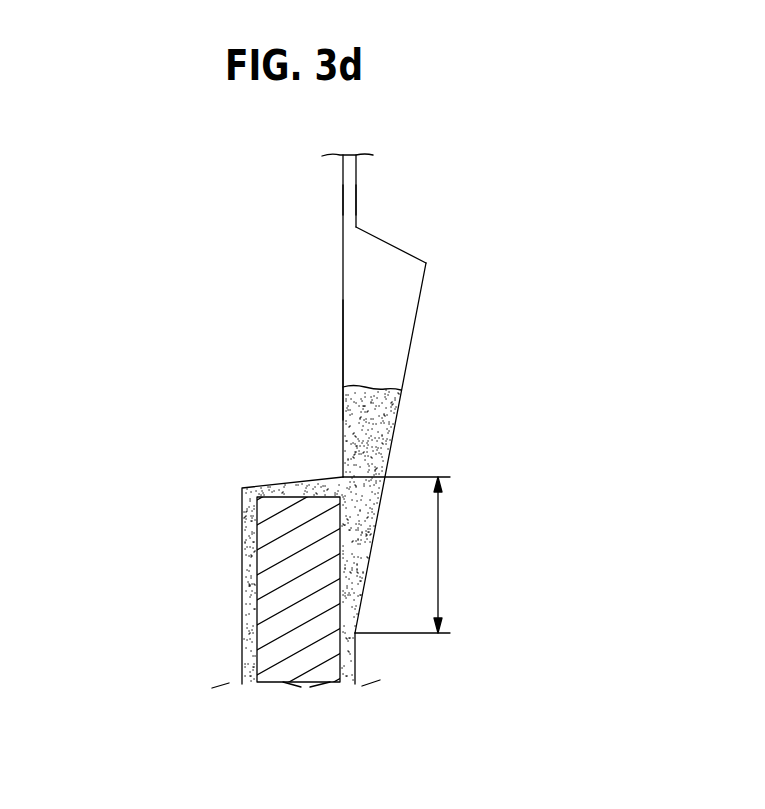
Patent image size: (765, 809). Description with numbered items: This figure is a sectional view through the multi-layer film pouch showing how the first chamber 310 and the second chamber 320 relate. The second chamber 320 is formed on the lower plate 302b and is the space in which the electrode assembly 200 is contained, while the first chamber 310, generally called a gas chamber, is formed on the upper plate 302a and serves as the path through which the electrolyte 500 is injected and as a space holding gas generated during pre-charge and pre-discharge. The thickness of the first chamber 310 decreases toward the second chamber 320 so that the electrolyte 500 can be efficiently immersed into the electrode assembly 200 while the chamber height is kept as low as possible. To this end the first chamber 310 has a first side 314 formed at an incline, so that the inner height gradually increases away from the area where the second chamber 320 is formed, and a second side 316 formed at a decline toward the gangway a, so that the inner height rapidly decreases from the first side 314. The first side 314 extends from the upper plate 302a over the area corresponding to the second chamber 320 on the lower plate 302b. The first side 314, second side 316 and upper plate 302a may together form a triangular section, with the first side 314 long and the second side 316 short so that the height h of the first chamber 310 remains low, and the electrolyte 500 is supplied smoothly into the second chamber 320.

The first chamber 310 is at (372, 293).
The second side 316 is at (397, 243).
The first side 314 is at (417, 311).
The upper plate 302a is at (355, 660).
The lower plate 302b is at (343, 357).
The electrolyte 500 is at (378, 433).
The second chamber 320 is at (242, 532).
The electrode assembly 200 is at (262, 625).
The height h is at (404, 555).
The gangway a is at (349, 201).